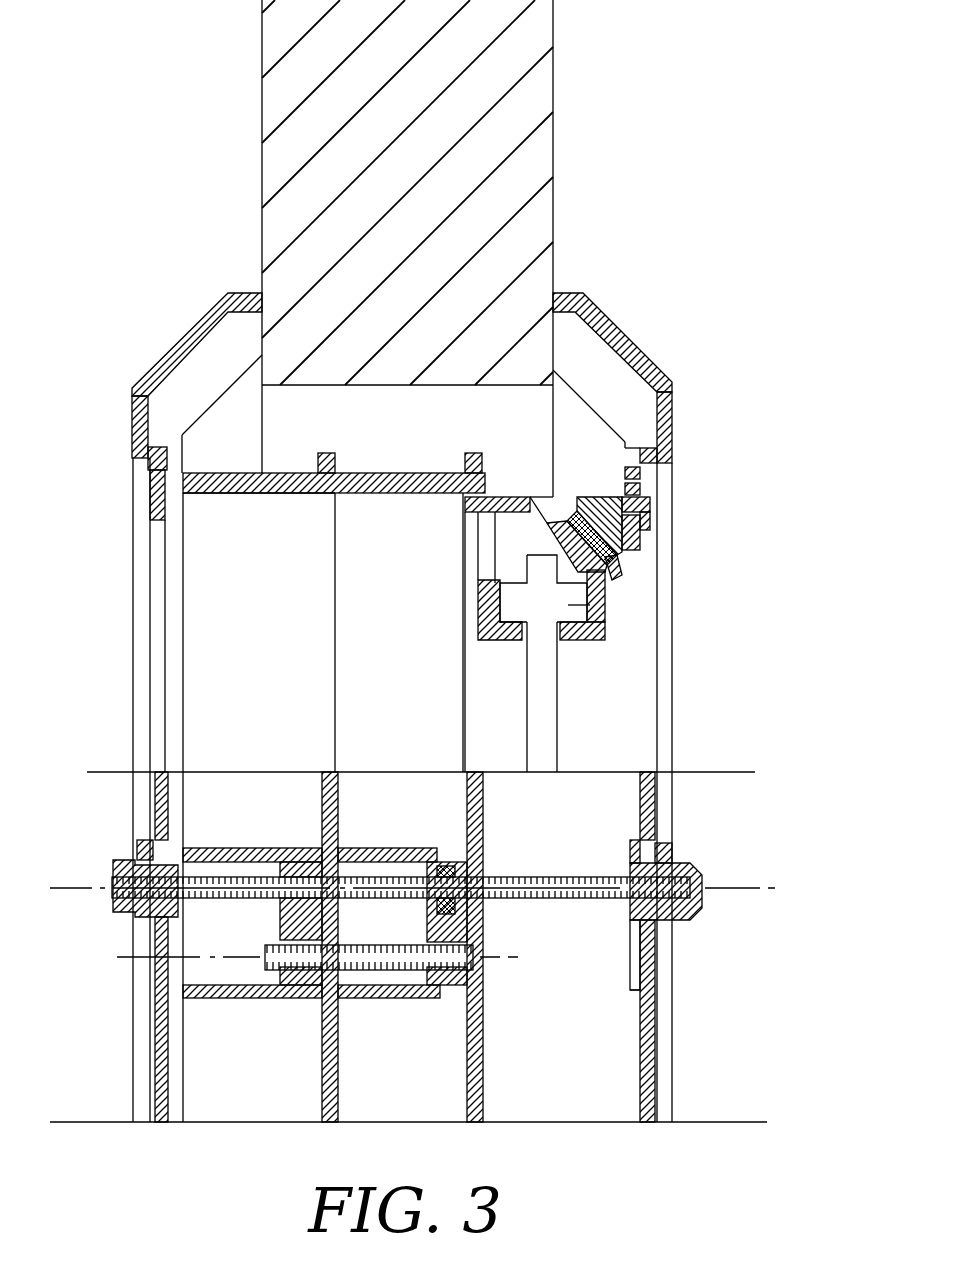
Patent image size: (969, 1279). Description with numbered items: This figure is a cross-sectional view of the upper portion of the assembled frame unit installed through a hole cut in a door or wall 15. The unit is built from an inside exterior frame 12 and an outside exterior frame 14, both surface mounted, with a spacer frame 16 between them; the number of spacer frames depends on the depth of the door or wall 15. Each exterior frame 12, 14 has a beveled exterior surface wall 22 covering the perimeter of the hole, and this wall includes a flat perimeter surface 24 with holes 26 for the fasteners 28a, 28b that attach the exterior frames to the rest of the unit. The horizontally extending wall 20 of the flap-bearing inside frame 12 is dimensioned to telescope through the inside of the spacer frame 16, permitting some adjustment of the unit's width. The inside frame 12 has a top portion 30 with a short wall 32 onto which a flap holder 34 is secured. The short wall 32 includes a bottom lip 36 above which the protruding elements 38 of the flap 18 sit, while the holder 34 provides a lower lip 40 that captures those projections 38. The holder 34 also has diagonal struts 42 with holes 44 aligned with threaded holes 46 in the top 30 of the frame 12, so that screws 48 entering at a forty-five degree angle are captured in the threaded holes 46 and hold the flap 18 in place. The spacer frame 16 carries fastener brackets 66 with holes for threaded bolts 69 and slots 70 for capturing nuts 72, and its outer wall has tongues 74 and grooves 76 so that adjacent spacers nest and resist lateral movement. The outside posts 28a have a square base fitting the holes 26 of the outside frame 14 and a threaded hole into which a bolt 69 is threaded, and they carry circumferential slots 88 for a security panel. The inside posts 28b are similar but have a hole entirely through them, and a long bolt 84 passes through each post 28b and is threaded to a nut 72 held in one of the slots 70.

The inside exterior frame 12 is at (658, 372).
The outside exterior frame 14 is at (160, 365).
The door or wall 15 is at (530, 162).
The spacer frame 16 is at (326, 455).
The flap 18 is at (555, 746).
The horizontally extending wall 20 is at (463, 507).
The beveled exterior surface wall 22 is at (210, 312).
The flat perimeter surface 24 is at (152, 790).
The holes 26 is at (623, 860).
The outside exterior post 28a is at (118, 918).
The inside post 28b is at (693, 922).
The top portion 30 is at (568, 483).
The short wall 32 is at (463, 573).
The flap holder 34 is at (587, 640).
The bottom lip 36 is at (517, 640).
The protruding elements 38 is at (598, 624).
The lower lip 40 is at (567, 643).
The diagonal struts 42 is at (627, 552).
The holes 44 is at (617, 578).
The threaded holes 46 is at (595, 497).
The screws 48 is at (613, 580).
The fastener brackets 66 is at (302, 845).
The threaded bolts 69 is at (207, 898).
The slots 70 is at (450, 1000).
The nuts 72 is at (457, 842).
The tongues 74 is at (312, 495).
The grooves 76 is at (485, 480).
The long bolt 84 is at (537, 900).
The circumferential slots 88 is at (140, 857).